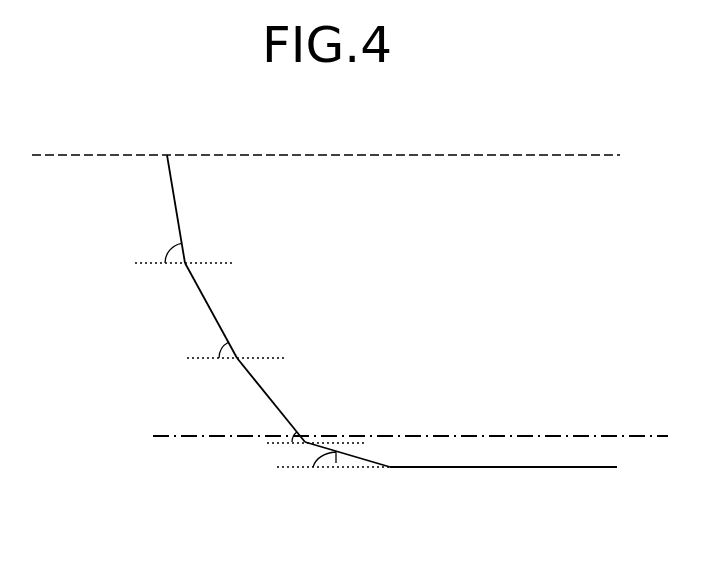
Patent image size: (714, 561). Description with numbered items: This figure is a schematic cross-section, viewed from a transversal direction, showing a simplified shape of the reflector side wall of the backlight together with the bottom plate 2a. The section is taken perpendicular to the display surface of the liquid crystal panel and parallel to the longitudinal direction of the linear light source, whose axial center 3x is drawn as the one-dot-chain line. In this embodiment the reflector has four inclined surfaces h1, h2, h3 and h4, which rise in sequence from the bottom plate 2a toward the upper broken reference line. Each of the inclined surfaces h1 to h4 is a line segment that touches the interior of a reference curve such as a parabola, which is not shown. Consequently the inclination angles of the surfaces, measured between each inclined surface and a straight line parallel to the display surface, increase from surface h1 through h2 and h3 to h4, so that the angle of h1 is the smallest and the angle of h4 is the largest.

The first inclined surface h1 is at (365, 458).
The second inclined surface h2 is at (272, 400).
The third inclined surface h3 is at (212, 312).
The fourth inclined surface h4 is at (176, 210).
The axial center of the linear light source 3x is at (640, 436).
The bottom plate 2a is at (533, 467).